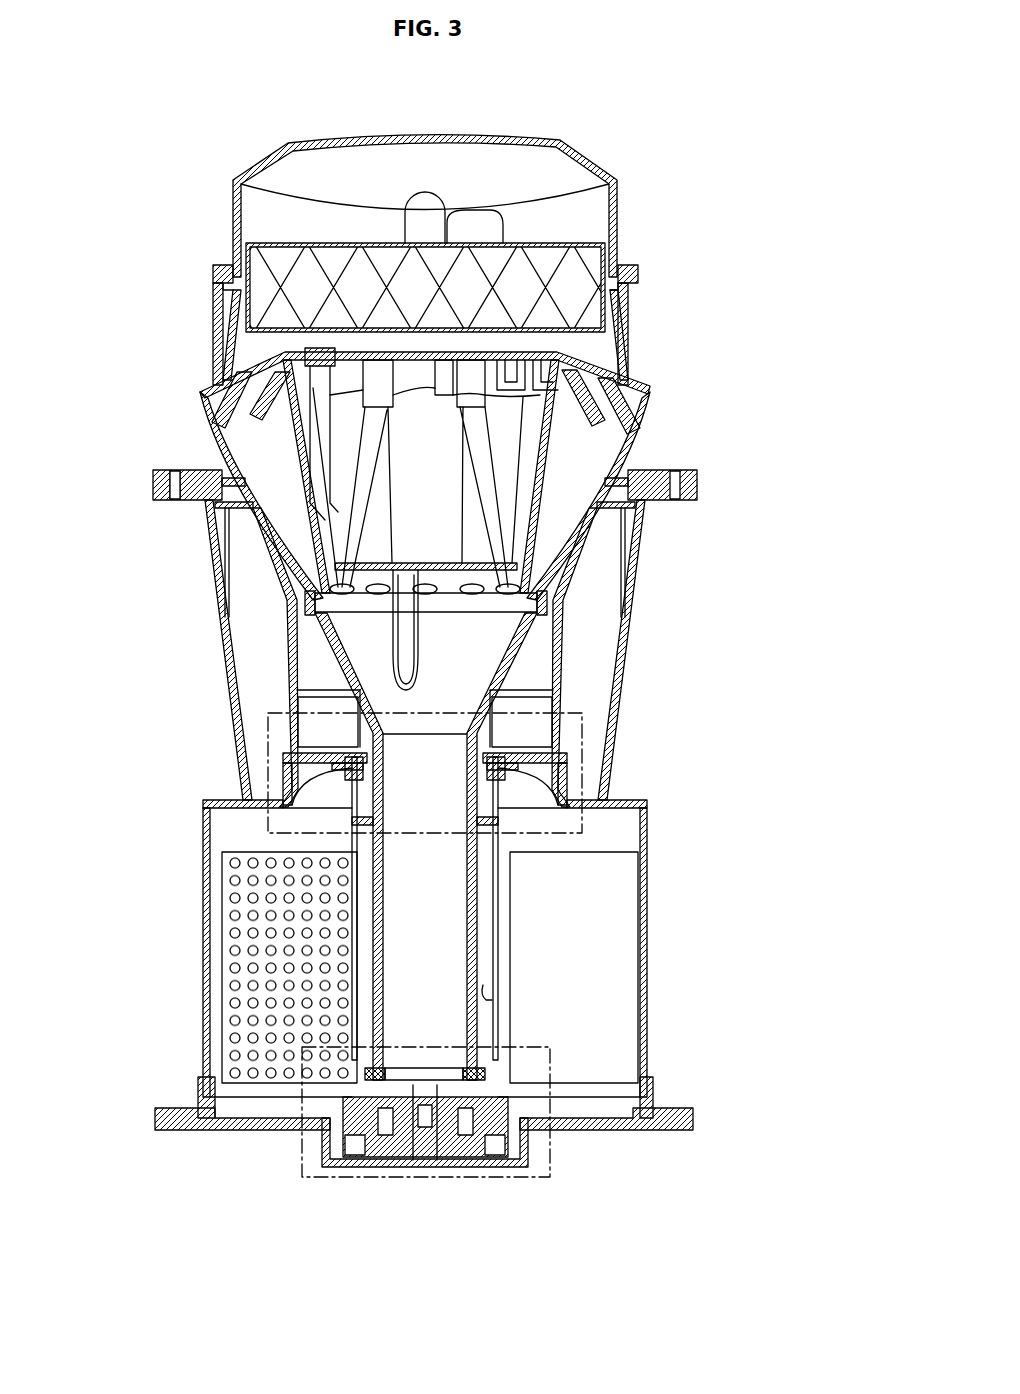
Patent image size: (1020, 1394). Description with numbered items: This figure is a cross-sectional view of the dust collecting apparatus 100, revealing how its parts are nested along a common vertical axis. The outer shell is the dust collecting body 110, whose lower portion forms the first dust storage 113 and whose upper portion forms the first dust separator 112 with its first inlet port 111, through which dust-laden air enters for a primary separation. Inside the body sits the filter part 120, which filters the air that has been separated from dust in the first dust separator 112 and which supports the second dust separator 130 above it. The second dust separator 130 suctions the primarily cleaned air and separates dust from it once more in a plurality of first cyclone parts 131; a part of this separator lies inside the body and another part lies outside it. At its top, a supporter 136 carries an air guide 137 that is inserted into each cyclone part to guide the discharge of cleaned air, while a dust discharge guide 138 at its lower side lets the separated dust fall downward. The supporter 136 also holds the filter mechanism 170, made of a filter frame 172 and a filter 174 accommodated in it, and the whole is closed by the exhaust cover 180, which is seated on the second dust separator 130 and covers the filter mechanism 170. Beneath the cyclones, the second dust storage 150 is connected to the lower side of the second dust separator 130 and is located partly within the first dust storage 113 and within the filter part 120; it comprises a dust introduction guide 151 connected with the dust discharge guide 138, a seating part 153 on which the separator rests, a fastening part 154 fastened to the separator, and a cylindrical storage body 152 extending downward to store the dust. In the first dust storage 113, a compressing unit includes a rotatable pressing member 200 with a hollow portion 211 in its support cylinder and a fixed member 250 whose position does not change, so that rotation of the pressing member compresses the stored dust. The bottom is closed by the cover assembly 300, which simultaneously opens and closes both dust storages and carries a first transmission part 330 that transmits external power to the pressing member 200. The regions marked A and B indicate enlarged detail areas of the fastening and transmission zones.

The dust collecting apparatus 100 is at (423, 590).
The dust collecting body 110 is at (470, 627).
The first inlet port 111 is at (236, 570).
The first dust separator 112 is at (640, 598).
The first dust storage 113 is at (648, 960).
The filter part 120 is at (580, 641).
The second dust separator 130 is at (481, 474).
The first cyclone parts 131 is at (630, 468).
The supporter 136 is at (628, 328).
The air guide 137 is at (614, 379).
The dust discharge guide 138 is at (548, 588).
The second dust storage 150 is at (494, 913).
The dust introduction guide 151 is at (402, 665).
The storage body 152 is at (378, 927).
The seating part 153 is at (302, 598).
The fastening part 154 is at (300, 782).
The filter mechanism 170 is at (431, 278).
The filter frame 172 is at (604, 241).
The filter 174 is at (638, 273).
The exhaust cover 180 is at (601, 142).
The pressing member 200 is at (423, 959).
The hollow portion 211 is at (492, 1020).
The fixed member 250 is at (638, 862).
The cover assembly 300 is at (424, 1150).
The first transmission part 330 is at (540, 1146).
The detail region A is at (585, 745).
The detail region B is at (455, 1178).